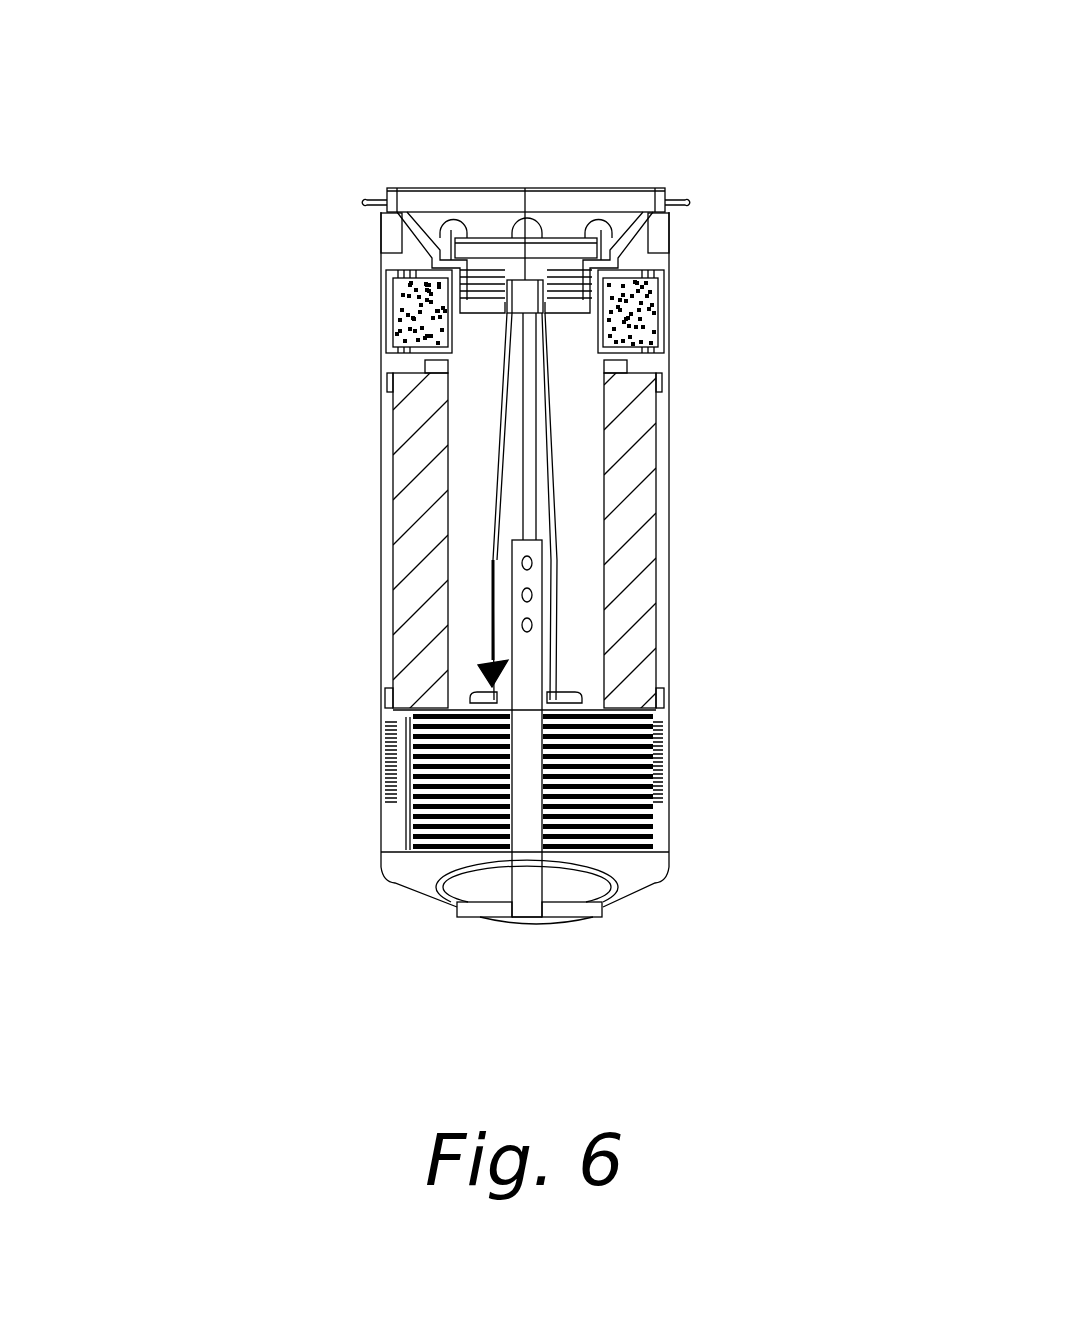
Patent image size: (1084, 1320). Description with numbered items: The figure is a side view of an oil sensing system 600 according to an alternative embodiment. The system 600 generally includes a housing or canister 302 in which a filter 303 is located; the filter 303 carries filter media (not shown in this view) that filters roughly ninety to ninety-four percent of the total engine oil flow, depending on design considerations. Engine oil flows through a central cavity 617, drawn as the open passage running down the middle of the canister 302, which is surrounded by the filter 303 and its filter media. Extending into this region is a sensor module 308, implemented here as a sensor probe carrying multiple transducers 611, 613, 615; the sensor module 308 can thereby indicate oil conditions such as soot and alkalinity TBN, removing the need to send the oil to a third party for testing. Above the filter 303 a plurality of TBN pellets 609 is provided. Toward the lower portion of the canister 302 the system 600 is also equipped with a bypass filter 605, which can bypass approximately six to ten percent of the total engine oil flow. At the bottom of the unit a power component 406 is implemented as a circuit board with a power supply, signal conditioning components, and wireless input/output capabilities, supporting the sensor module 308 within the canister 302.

The oil sensing system 600 is at (158, 150).
The central cavity 617 is at (563, 365).
The TBN pellets 609 is at (650, 313).
The housing or canister 302 is at (672, 445).
The filter 303 is at (645, 560).
The transducer 611 is at (520, 560).
The transducer 613 is at (520, 594).
The transducer 615 is at (520, 625).
The sensor module 308 is at (490, 670).
The bypass filter 605 is at (653, 768).
The power component 406 is at (608, 918).